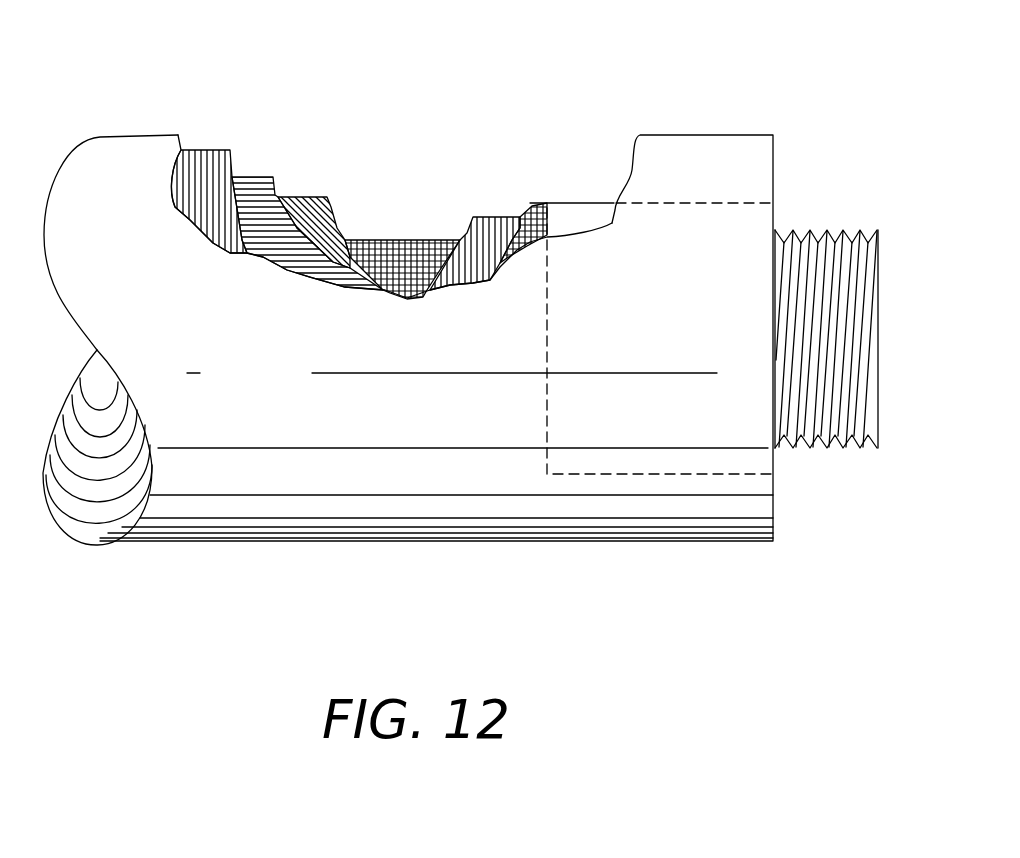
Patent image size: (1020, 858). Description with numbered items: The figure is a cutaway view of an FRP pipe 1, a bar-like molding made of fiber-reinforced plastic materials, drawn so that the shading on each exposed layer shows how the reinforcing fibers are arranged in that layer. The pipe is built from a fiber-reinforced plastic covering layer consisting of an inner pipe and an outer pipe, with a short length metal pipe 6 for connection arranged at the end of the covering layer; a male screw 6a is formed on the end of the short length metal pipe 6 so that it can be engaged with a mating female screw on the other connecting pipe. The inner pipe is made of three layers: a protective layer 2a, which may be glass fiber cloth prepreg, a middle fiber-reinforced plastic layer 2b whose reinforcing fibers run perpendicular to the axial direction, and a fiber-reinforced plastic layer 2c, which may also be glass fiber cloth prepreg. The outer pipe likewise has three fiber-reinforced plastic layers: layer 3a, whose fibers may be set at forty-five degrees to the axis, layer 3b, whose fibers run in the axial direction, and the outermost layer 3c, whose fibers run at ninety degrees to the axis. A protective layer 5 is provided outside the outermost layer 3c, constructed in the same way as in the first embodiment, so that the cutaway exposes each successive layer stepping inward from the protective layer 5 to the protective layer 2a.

The FRP pipe 1 is at (706, 116).
The protective layer 2a is at (410, 243).
The fiber-reinforced plastic layer 2b is at (493, 227).
The fiber-reinforced plastic layer 2c is at (545, 212).
The fiber-reinforced plastic layer 3a is at (308, 200).
The fiber-reinforced plastic layer 3b is at (250, 183).
The outermost fiber-reinforced plastic layer 3c is at (203, 173).
The protective layer 5 is at (110, 145).
The short length metal pipe 6 is at (575, 213).
The male screw 6a is at (837, 230).